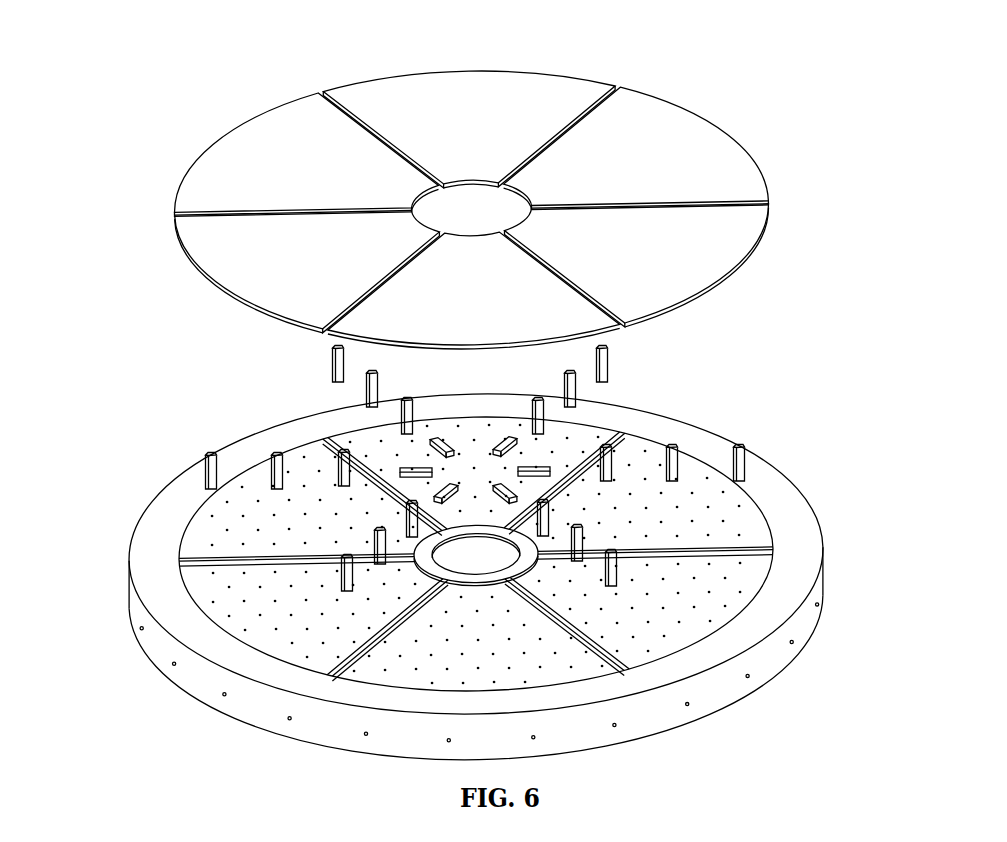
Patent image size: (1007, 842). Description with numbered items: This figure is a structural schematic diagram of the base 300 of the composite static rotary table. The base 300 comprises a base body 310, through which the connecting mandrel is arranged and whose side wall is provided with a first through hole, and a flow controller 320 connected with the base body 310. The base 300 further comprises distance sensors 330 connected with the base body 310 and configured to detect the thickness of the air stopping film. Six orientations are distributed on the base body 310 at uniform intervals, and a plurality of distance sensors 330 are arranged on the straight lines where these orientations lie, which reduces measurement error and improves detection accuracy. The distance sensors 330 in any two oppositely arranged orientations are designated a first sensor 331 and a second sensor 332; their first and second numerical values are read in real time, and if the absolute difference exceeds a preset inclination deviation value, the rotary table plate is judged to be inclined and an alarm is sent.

The base 300 is at (748, 55).
The base body 310 is at (793, 565).
The flow controller 320 is at (697, 262).
The distance sensor 330 is at (127, 382).
The first sensor 331 is at (600, 447).
The second sensor 332 is at (340, 472).